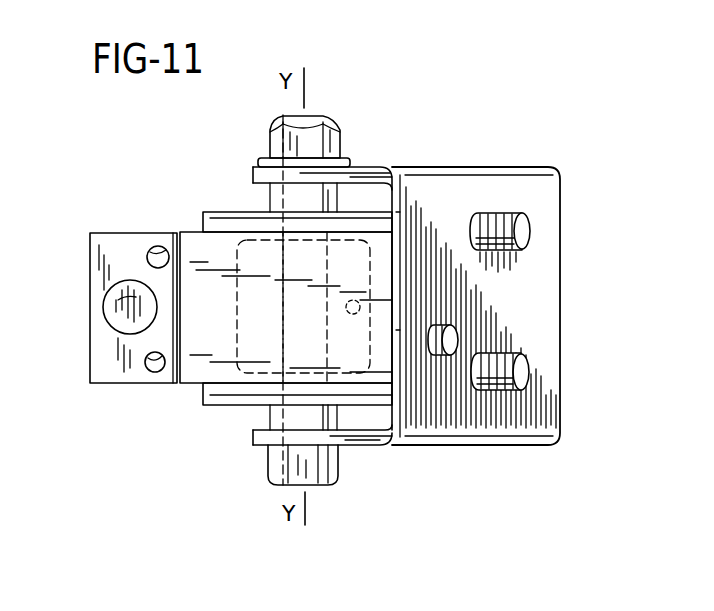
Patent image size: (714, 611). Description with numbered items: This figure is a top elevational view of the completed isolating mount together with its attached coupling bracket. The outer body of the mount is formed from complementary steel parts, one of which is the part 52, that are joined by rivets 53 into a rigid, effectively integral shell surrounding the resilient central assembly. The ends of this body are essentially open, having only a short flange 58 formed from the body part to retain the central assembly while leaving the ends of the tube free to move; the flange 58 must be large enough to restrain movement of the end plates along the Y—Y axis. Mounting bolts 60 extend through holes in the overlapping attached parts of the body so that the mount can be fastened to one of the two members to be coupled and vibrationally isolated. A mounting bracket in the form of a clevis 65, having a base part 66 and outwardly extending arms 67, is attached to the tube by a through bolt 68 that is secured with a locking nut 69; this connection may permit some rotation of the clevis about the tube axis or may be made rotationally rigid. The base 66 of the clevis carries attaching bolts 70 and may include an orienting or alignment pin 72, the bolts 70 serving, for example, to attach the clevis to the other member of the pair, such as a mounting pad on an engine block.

The complementary part 52 is at (197, 374).
The rivets 53 is at (155, 247).
The short flange 58 is at (233, 406).
The mounting bolts 60 is at (105, 312).
The clevis 65 is at (441, 311).
The base part 66 is at (552, 325).
The outwardly extending arms 67 is at (363, 173).
The through bolt 68 is at (276, 467).
The locking nut 69 is at (304, 126).
The attaching bolts 70 is at (531, 229).
The alignment pin 72 is at (456, 329).